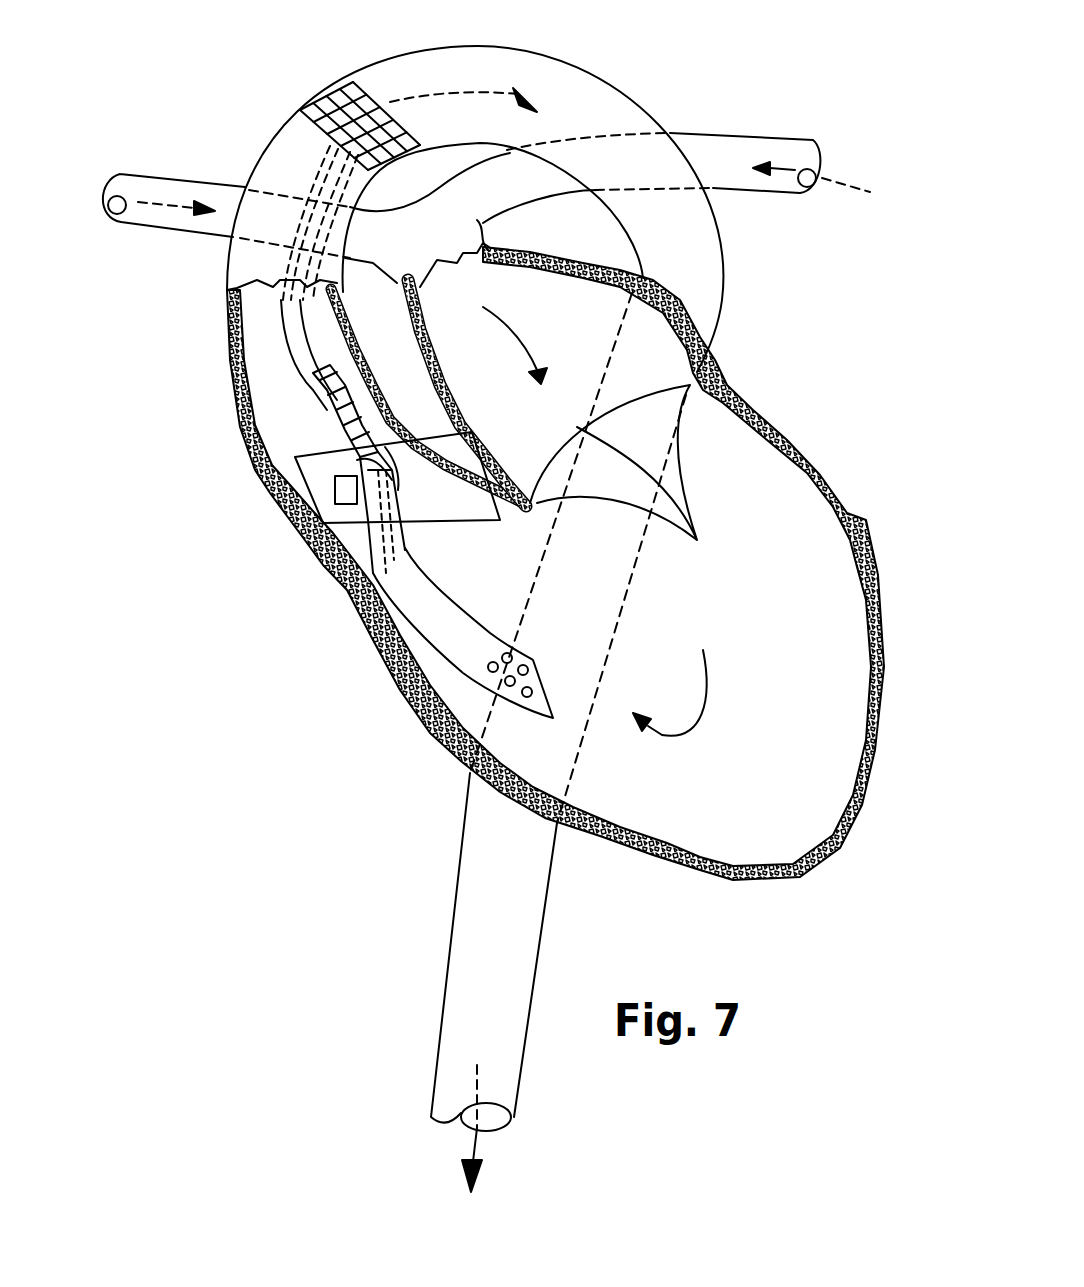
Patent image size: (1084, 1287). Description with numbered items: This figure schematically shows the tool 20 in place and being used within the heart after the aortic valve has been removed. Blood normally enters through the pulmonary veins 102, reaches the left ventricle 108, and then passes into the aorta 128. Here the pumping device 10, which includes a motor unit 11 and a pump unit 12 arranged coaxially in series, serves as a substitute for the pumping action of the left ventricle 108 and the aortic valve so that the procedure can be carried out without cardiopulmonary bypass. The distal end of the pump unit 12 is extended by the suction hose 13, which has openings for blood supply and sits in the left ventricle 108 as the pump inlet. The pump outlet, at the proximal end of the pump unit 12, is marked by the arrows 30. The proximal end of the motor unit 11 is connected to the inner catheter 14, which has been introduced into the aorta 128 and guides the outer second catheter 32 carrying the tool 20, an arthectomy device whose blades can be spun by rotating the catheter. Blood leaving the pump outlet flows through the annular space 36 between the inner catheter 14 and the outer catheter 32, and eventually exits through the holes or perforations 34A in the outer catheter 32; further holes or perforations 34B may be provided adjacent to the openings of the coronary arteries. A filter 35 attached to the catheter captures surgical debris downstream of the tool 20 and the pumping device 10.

The pumping device 10 is at (303, 421).
The motor unit 11 is at (327, 393).
The pump unit 12 is at (472, 431).
The suction hose 13 is at (453, 617).
The catheter 14 is at (300, 340).
The tool 20 is at (343, 592).
The arrows 30 is at (390, 447).
The second catheter 32 is at (293, 357).
The holes or perforations 34A is at (333, 258).
The holes or perforations 34B is at (320, 440).
The filter 35 is at (300, 110).
The annular space 36 is at (313, 326).
The pulmonary veins 102 is at (750, 171).
The left ventricle 108 is at (727, 723).
The aorta 128 is at (517, 77).